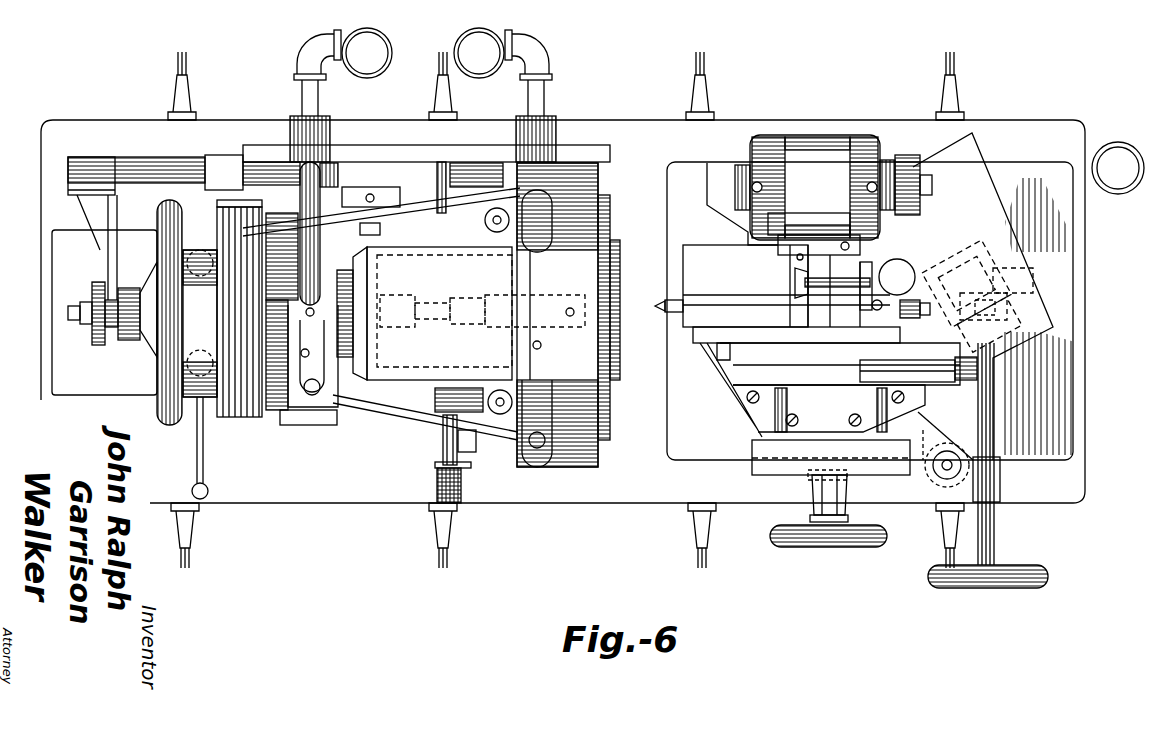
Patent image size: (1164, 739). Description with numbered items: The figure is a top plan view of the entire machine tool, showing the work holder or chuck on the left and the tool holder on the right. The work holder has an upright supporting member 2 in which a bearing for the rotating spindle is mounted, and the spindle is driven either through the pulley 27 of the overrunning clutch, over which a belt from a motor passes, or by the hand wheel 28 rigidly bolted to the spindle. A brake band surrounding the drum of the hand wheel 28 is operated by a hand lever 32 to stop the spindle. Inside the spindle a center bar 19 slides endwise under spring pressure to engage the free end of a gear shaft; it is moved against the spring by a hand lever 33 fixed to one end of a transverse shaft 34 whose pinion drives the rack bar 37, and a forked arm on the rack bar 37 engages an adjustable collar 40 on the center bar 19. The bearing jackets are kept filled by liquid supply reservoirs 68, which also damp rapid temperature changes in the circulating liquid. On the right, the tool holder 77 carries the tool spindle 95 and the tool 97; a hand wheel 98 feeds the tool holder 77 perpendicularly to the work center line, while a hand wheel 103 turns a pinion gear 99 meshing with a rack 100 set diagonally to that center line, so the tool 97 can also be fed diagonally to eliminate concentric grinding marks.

The upright supporting member 2 is at (578, 460).
The center bar 19 is at (132, 342).
The pulley 27 is at (252, 420).
The hand wheel 28 is at (163, 412).
The hand lever 32 is at (205, 468).
The hand lever 33 is at (460, 495).
The shaft 34 is at (452, 238).
The rack bar 37 is at (165, 165).
The collar 40 is at (98, 347).
The liquid supply reservoir 68 is at (396, 26).
The tool holder 77 is at (680, 212).
The tool spindle 95 is at (680, 300).
The tool 97 is at (667, 316).
The hand wheel 98 is at (822, 536).
The pinion gear 99 is at (1010, 312).
The rack 100 is at (1035, 280).
The hand wheel 103 is at (988, 578).